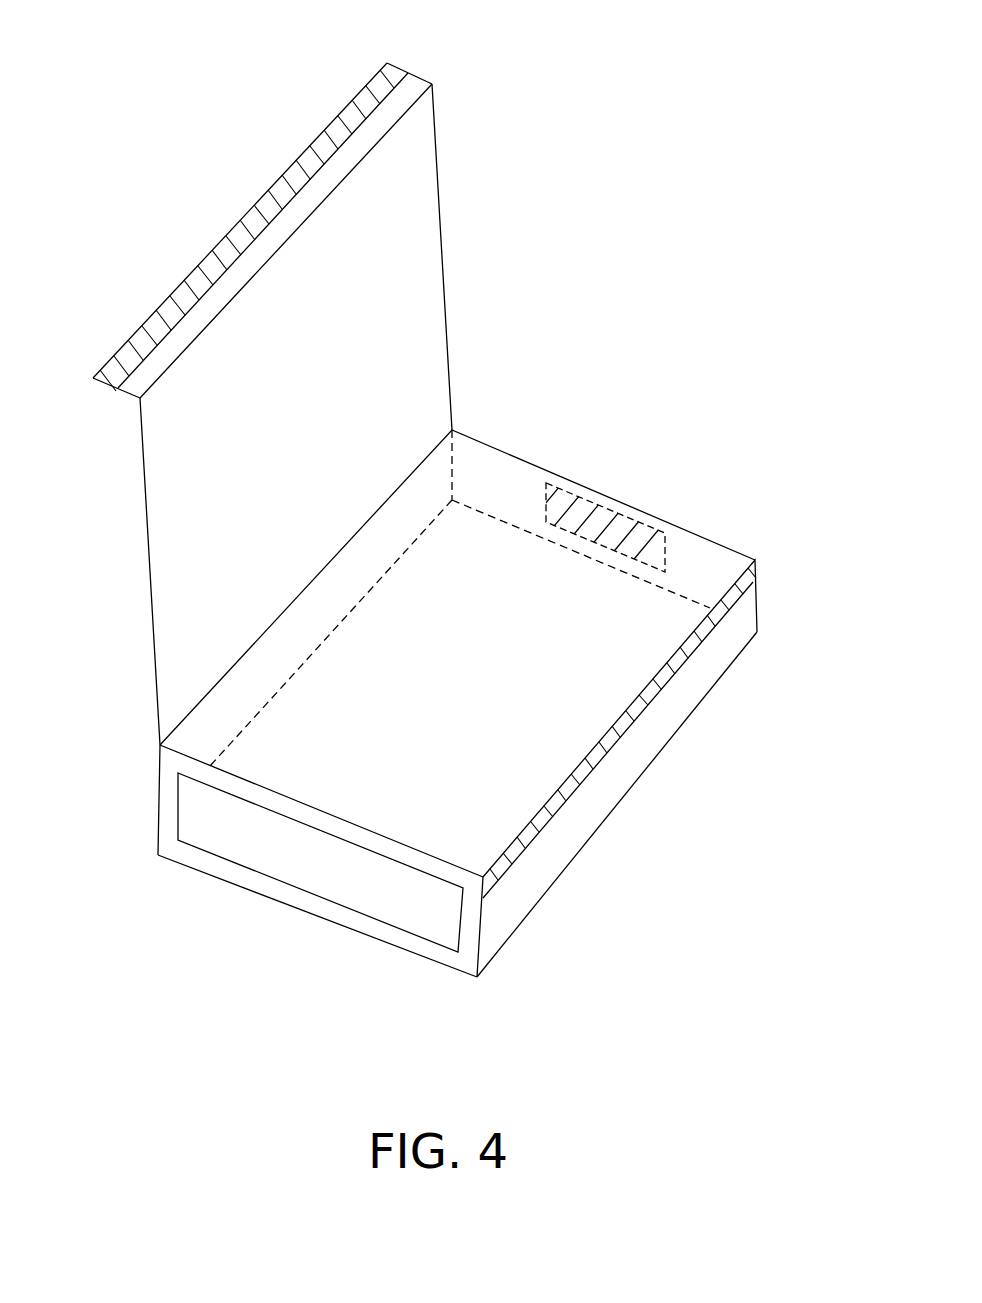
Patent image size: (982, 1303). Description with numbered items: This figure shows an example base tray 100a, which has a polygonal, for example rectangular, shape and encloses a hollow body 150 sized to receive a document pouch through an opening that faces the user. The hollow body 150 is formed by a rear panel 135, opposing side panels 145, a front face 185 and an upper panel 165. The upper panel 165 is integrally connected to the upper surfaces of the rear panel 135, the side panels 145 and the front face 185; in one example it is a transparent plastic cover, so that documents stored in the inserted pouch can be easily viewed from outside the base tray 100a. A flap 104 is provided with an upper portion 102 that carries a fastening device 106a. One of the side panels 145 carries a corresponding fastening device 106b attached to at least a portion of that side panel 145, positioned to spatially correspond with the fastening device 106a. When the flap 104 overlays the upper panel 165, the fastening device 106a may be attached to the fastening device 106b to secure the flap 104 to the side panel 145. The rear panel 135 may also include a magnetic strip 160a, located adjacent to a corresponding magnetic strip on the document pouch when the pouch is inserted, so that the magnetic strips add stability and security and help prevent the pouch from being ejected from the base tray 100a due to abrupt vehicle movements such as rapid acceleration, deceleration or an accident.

The base tray 100a is at (665, 226).
The upper portion 102 is at (430, 80).
The flap 104 is at (447, 317).
The fastening device 106a is at (393, 72).
The fastening device 106b is at (752, 572).
The rear panel 135 is at (526, 457).
The side panels 145 is at (158, 765).
The hollow body 150 is at (410, 900).
The magnetic strip 160a is at (610, 523).
The upper panel 165 is at (590, 695).
The front face 185 is at (197, 853).